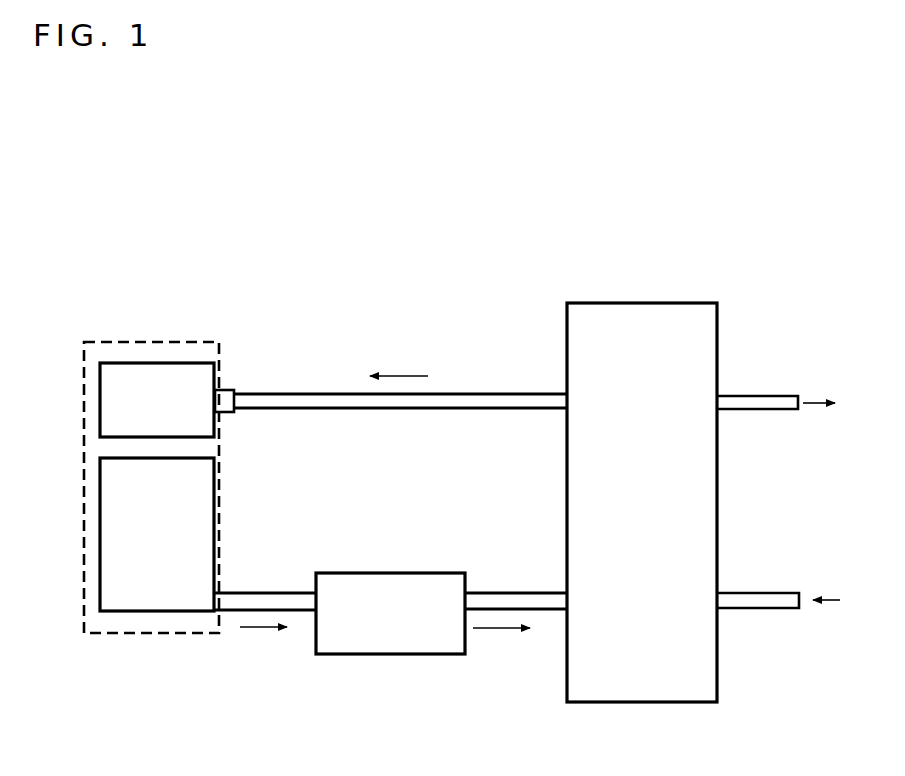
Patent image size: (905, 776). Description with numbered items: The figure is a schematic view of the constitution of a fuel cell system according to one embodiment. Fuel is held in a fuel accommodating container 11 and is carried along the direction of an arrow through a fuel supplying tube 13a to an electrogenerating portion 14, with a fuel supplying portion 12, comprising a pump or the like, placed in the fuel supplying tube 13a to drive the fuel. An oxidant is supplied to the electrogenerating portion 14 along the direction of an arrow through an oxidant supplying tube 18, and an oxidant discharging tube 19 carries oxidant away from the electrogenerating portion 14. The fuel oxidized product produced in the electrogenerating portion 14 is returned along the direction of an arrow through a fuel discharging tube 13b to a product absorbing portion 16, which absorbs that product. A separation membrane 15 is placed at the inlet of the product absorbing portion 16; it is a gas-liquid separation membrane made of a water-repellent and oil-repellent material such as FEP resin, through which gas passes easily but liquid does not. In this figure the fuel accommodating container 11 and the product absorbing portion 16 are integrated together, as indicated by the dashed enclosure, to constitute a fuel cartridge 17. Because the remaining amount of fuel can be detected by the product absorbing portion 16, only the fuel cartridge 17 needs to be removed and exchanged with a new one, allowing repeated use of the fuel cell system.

The fuel accommodating container 11 is at (157, 534).
The fuel supplying portion 12 is at (390, 613).
The fuel supplying tube 13a is at (518, 600).
The fuel discharging tube 13b is at (350, 400).
The electrogenerating portion 14 is at (642, 502).
The separation membrane 15 is at (224, 390).
The product absorbing portion 16 is at (157, 400).
The fuel cartridge 17 is at (160, 634).
The oxidant supplying tube 18 is at (752, 610).
The oxidant discharging tube 19 is at (753, 410).